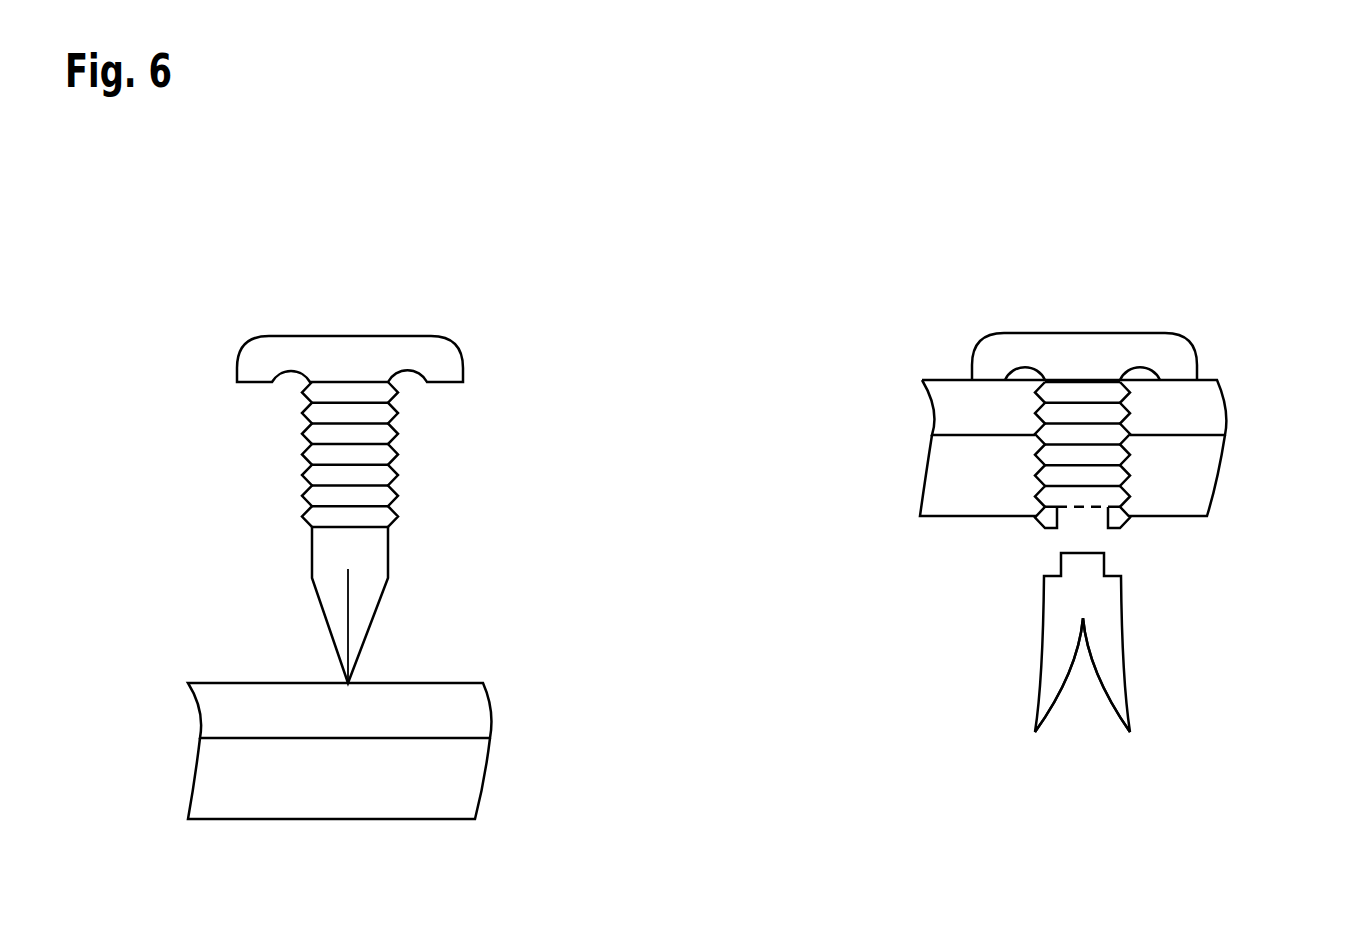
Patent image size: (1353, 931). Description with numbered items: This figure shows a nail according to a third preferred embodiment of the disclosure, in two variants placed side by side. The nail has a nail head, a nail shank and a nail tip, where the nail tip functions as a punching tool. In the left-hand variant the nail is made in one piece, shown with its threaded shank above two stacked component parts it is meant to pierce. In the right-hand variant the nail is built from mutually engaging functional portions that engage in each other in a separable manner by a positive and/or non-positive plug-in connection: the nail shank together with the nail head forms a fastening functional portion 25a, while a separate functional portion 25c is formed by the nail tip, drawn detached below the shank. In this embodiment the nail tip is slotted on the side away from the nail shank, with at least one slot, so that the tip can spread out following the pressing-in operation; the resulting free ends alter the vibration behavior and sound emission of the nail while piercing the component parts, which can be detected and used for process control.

The functional portion 25a is at (1052, 475).
The functional portion 25c is at (1105, 628).